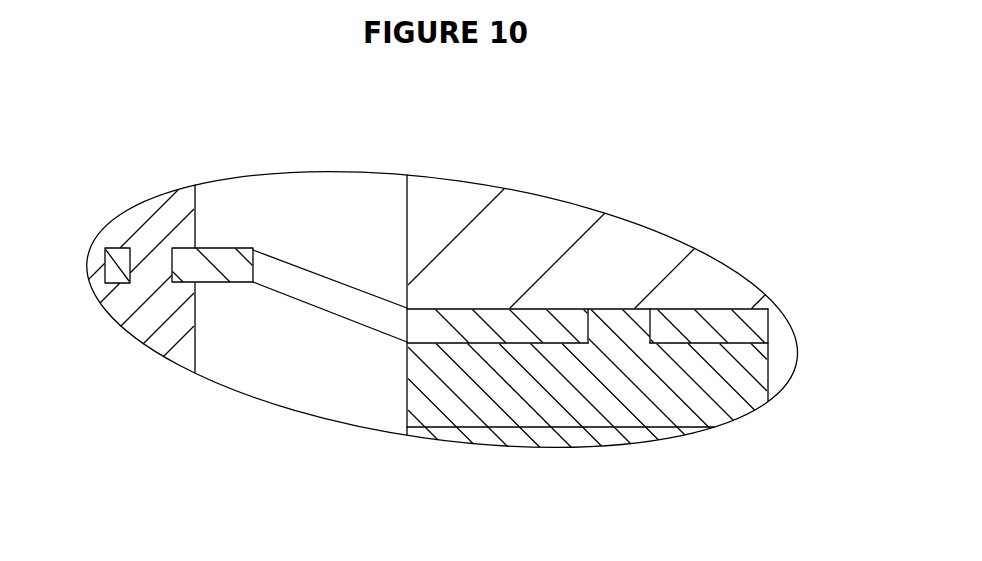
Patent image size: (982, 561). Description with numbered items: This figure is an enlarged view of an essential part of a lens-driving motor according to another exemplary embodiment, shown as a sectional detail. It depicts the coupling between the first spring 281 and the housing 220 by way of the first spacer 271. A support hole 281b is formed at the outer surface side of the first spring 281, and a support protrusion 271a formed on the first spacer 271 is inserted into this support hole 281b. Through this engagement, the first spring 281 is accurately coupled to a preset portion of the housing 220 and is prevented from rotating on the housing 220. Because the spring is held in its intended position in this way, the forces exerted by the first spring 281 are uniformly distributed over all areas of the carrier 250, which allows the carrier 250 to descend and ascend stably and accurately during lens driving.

The housing 220 is at (452, 203).
The carrier 250 is at (137, 320).
The first spring 281 is at (492, 328).
The support hole 281b is at (642, 331).
The first spacer 271 is at (708, 383).
The support protrusion 271a is at (612, 328).